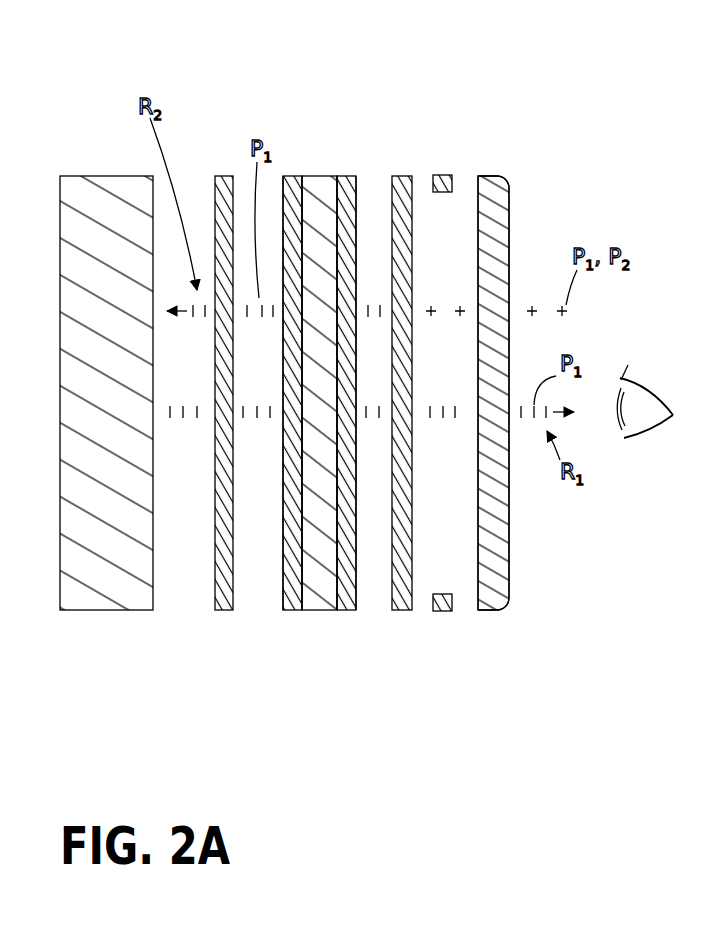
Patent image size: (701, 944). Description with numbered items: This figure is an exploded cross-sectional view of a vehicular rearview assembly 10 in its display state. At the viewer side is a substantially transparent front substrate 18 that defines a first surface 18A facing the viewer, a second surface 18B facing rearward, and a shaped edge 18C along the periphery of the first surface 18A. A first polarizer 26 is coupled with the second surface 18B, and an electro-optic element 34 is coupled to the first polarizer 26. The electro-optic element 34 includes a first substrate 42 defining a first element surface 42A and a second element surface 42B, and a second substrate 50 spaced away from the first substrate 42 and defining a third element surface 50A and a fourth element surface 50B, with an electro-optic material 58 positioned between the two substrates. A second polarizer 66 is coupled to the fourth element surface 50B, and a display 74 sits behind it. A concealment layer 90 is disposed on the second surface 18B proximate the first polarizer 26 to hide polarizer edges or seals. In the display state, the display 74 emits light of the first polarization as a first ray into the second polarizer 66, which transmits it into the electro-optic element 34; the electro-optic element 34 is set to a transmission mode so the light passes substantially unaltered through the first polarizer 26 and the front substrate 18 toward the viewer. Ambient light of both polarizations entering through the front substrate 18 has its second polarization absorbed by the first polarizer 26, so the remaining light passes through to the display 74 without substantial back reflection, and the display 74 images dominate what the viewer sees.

The vehicular rearview assembly 10 is at (474, 82).
The front substrate 18 is at (516, 384).
The first surface 18A is at (510, 237).
The second surface 18B is at (477, 488).
The shaped edge 18C is at (485, 176).
The first polarizer 26 is at (401, 176).
The electro-optic element 34 is at (310, 412).
The first substrate 42 is at (347, 618).
The first element surface 42A is at (356, 580).
The second element surface 42B is at (335, 588).
The second substrate 50 is at (289, 618).
The third element surface 50A is at (303, 600).
The fourth element surface 50B is at (283, 588).
The electro-optic material 58 is at (317, 598).
The second polarizer 66 is at (221, 176).
The display 74 is at (93, 170).
The concealment layer 90 is at (441, 176).